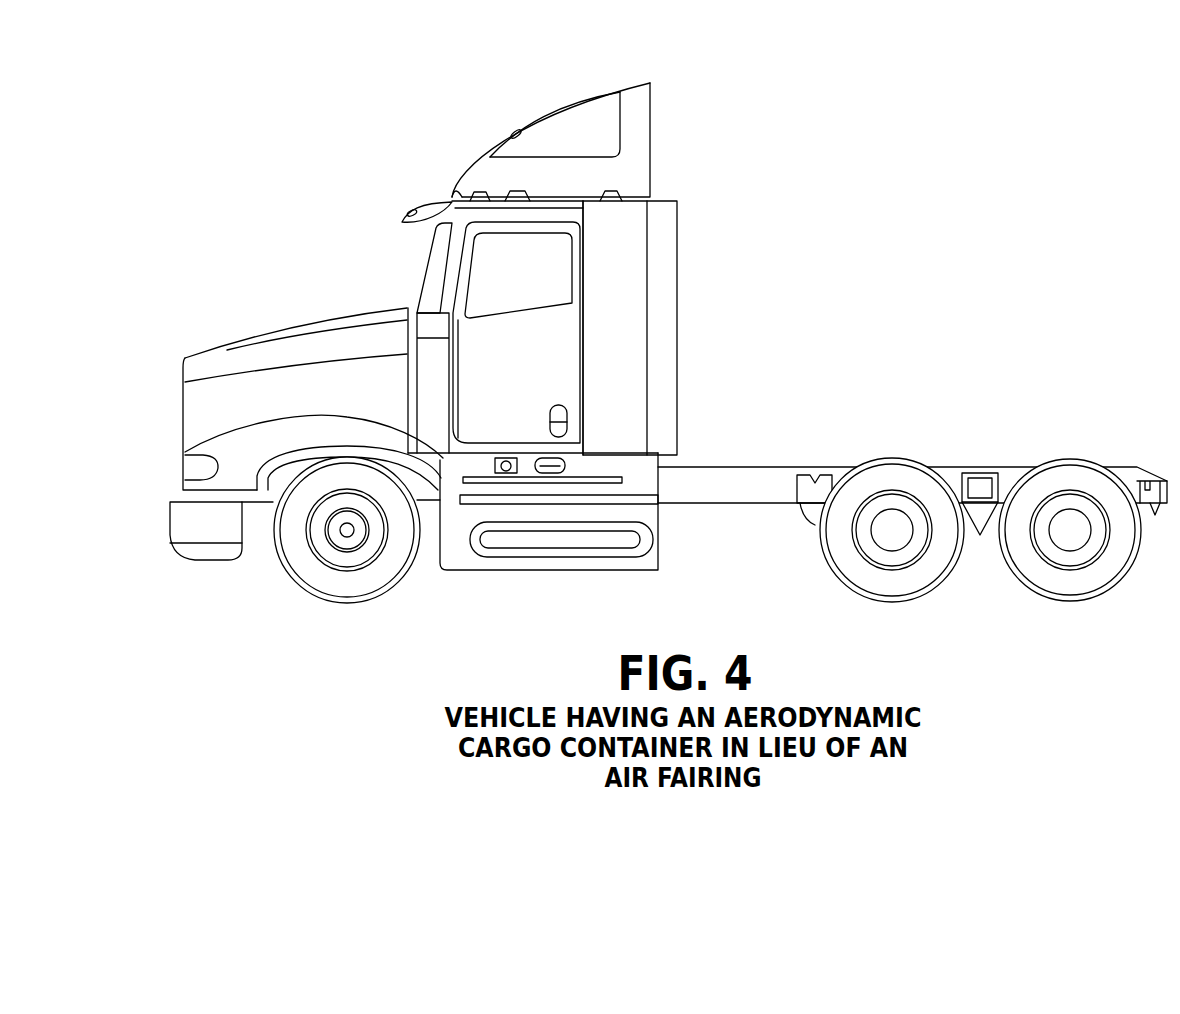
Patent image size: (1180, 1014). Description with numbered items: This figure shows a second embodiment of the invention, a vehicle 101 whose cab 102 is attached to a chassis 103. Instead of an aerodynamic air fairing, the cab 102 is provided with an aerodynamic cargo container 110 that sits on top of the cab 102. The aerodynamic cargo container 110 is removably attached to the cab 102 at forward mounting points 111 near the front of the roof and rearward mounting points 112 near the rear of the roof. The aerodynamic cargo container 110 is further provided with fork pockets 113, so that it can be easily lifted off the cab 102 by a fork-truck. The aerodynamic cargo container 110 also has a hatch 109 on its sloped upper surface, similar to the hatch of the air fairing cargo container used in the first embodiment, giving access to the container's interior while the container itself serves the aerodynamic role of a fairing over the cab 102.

The vehicle 101 is at (303, 323).
The cab 102 is at (421, 288).
The chassis 103 is at (720, 503).
The hatch 109 is at (553, 116).
The aerodynamic cargo container 110 is at (650, 128).
The forward mounting points 111 is at (478, 198).
The rearward mounting points 112 is at (632, 202).
The fork pockets 113 is at (518, 190).